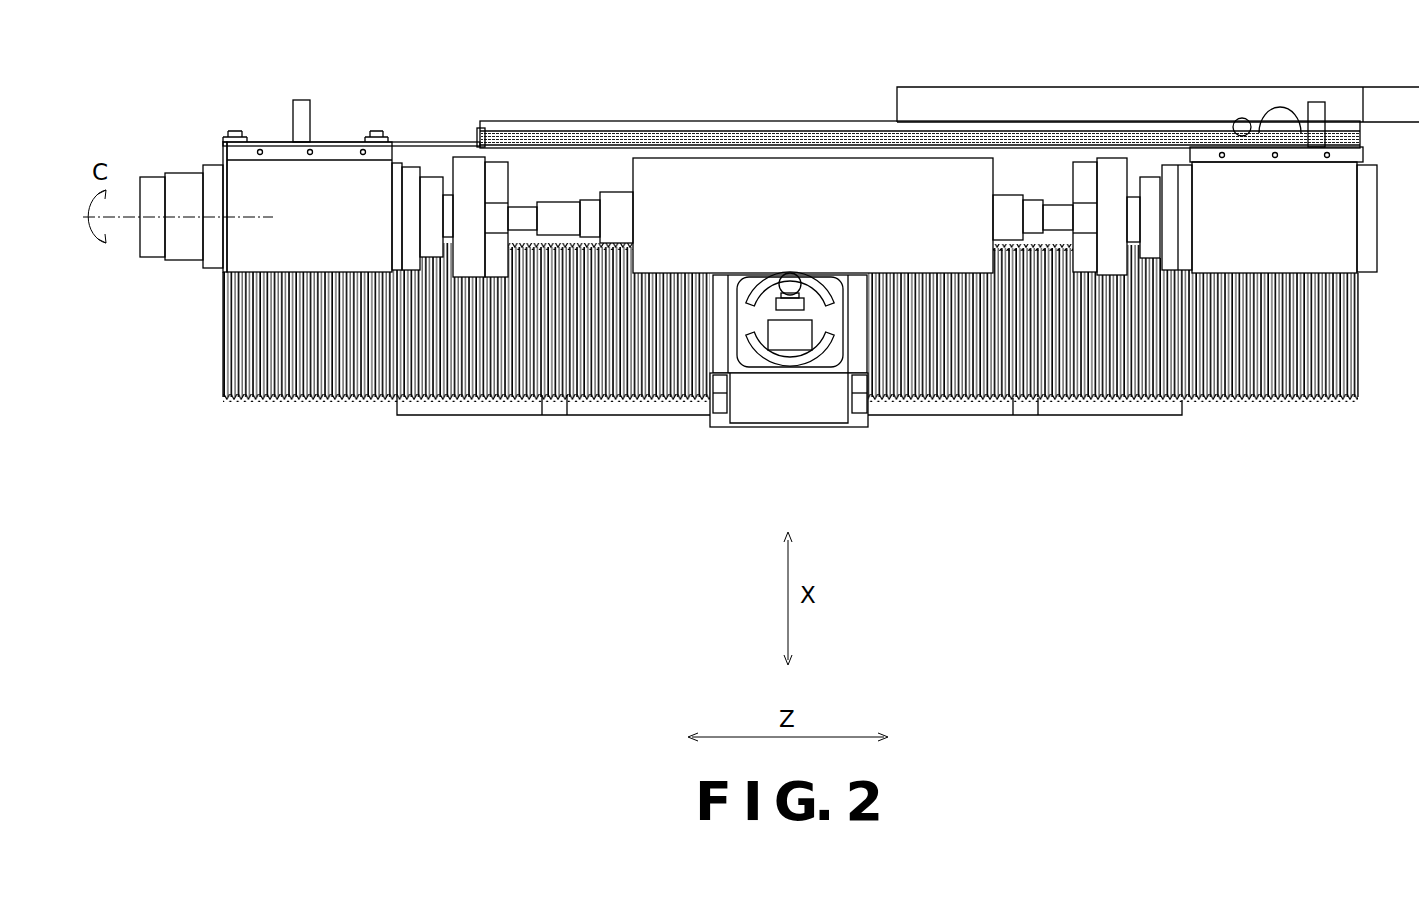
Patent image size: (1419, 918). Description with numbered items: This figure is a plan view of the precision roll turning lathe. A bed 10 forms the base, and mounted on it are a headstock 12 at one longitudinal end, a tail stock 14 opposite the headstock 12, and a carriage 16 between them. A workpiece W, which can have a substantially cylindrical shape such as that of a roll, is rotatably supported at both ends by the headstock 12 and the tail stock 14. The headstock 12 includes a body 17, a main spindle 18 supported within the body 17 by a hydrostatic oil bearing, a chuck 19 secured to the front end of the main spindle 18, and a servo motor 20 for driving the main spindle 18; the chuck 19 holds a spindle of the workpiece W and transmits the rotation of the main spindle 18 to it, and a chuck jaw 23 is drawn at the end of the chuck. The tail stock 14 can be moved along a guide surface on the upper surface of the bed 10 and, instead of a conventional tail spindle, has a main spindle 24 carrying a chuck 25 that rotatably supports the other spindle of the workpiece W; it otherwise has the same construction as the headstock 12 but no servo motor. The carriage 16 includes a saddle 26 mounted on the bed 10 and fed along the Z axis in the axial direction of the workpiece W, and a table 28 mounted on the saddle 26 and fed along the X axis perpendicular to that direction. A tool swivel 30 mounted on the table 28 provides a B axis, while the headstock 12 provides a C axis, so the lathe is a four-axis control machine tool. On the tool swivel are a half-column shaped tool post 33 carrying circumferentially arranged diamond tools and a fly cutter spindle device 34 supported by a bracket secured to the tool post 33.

The bed 10 is at (223, 382).
The headstock 12 is at (322, 186).
The tail stock 14 is at (1249, 197).
The carriage 16 is at (783, 368).
The body 17 is at (277, 177).
The main spindle 18 is at (430, 185).
The chuck 19 is at (463, 173).
The servo motor 20 is at (188, 245).
The chuck jaw 23 is at (155, 195).
The main spindle 24 is at (1150, 188).
The chuck 25 is at (1115, 170).
The saddle 26 is at (790, 430).
The table 28 is at (750, 375).
The tool swivel 30 is at (783, 372).
The tool post 33 is at (814, 312).
The fly cutter spindle device 34 is at (792, 274).
The workpiece W is at (776, 183).